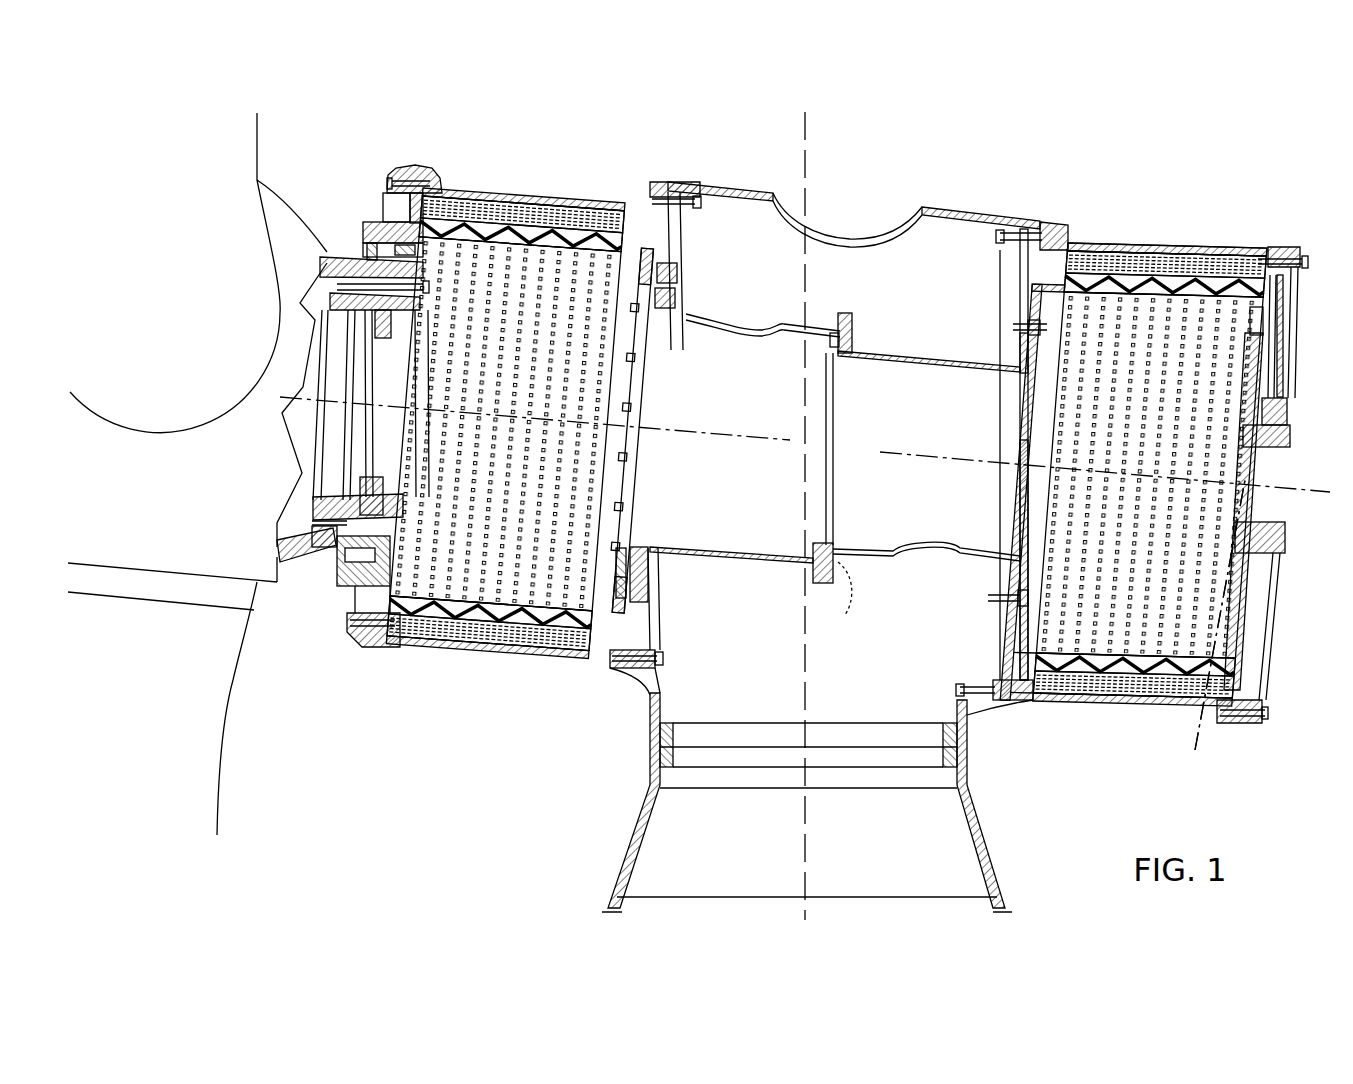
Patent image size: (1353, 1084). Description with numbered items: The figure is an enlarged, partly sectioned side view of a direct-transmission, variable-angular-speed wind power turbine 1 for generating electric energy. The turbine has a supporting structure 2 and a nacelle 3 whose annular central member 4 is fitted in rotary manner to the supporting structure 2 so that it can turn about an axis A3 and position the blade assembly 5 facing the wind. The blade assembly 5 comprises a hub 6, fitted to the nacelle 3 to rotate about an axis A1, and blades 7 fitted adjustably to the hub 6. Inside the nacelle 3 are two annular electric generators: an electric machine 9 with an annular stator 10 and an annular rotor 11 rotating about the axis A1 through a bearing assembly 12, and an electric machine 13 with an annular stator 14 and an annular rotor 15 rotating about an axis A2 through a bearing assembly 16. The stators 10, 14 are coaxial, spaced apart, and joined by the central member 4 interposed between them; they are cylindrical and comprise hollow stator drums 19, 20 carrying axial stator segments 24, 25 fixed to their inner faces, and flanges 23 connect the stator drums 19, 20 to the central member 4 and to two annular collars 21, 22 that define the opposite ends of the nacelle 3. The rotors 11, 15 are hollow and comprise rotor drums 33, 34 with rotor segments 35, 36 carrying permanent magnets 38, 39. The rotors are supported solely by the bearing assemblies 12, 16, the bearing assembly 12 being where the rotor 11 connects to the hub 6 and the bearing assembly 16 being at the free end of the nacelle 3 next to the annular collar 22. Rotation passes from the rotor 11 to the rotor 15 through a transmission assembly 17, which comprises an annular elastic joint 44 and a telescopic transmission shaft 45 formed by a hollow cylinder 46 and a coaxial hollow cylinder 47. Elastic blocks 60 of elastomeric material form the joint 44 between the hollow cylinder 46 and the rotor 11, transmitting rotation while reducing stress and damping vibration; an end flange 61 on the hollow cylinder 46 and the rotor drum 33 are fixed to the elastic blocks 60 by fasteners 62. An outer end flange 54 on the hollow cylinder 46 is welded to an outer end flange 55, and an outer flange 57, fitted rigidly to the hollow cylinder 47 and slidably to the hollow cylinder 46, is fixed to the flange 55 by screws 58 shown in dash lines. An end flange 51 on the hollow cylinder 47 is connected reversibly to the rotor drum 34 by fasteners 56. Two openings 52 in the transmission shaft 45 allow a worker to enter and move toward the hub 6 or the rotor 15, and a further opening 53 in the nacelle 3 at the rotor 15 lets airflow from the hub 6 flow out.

The wind power turbine 1 is at (437, 800).
The supporting structure 2 is at (978, 828).
The nacelle 3 is at (1138, 170).
The annular central member 4 is at (977, 212).
The blade assembly 5 is at (252, 712).
The hub 6 is at (297, 563).
The blades 7 is at (230, 162).
The electric machine 9 is at (574, 170).
The annular stator 10 is at (583, 194).
The annular rotor 11 is at (614, 357).
The bearing assembly 12 is at (400, 262).
The electric machine 13 is at (1172, 228).
The annular stator 14 is at (1182, 240).
The annular rotor 15 is at (1065, 281).
The bearing assembly 16 is at (1270, 446).
The transmission assembly 17 is at (922, 276).
The hollow stator drum 19 is at (612, 196).
The hollow stator drum 20 is at (1117, 246).
The annular collar 21 is at (366, 582).
The annular collar 22 is at (1262, 572).
The flanges 23 is at (416, 168).
The axial stator segments 24 is at (637, 221).
The axial stator segments 25 is at (1062, 252).
The rotor drum 33 is at (636, 600).
The rotor drum 34 is at (1010, 625).
The rotor segments 35 is at (640, 238).
The rotor segments 36 is at (1065, 258).
The permanent magnets 38 is at (461, 232).
The permanent magnets 39 is at (1161, 262).
The annular elastic joint 44 is at (668, 256).
The transmission shaft 45 is at (792, 568).
The hollow cylinder 46 is at (784, 326).
The hollow cylinder 47 is at (917, 358).
The end flange 51 is at (1019, 357).
The openings 52 is at (766, 338).
The further opening 53 is at (1272, 497).
The outer end flange 54 is at (851, 312).
The outer end flange 55 is at (856, 318).
The fasteners 56 is at (1062, 318).
The outer flange 57 is at (834, 350).
The screws 58 is at (848, 344).
The elastic blocks 60 is at (676, 293).
The end flange 61 is at (678, 270).
The fasteners 62 is at (645, 280).
The axis A1 is at (1204, 626).
The axis A2 is at (1220, 615).
The axis A3 is at (808, 170).